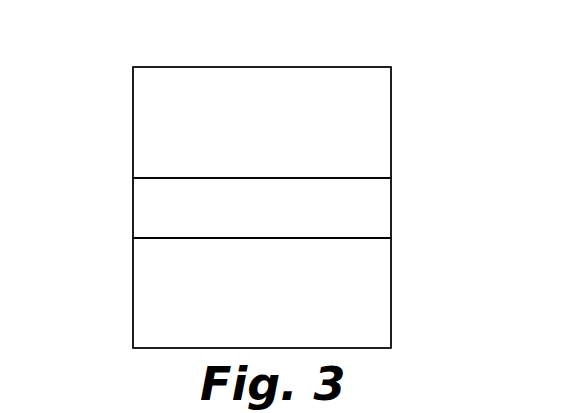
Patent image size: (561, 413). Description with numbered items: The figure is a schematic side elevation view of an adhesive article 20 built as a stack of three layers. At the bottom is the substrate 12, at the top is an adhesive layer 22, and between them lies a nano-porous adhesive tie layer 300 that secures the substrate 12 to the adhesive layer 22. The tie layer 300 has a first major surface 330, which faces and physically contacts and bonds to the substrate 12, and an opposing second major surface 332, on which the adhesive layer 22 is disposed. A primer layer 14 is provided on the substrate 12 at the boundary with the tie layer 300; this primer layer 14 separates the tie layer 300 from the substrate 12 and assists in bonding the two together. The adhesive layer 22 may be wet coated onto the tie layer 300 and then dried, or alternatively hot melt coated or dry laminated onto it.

The adhesive article 20 is at (429, 129).
The adhesive layer 22 is at (280, 131).
The nano-porous adhesive tie layer 300 is at (289, 221).
The substrate 12 is at (280, 301).
The second major surface 332 is at (160, 178).
The primer layer 14 is at (147, 238).
The first major surface 330 is at (348, 238).